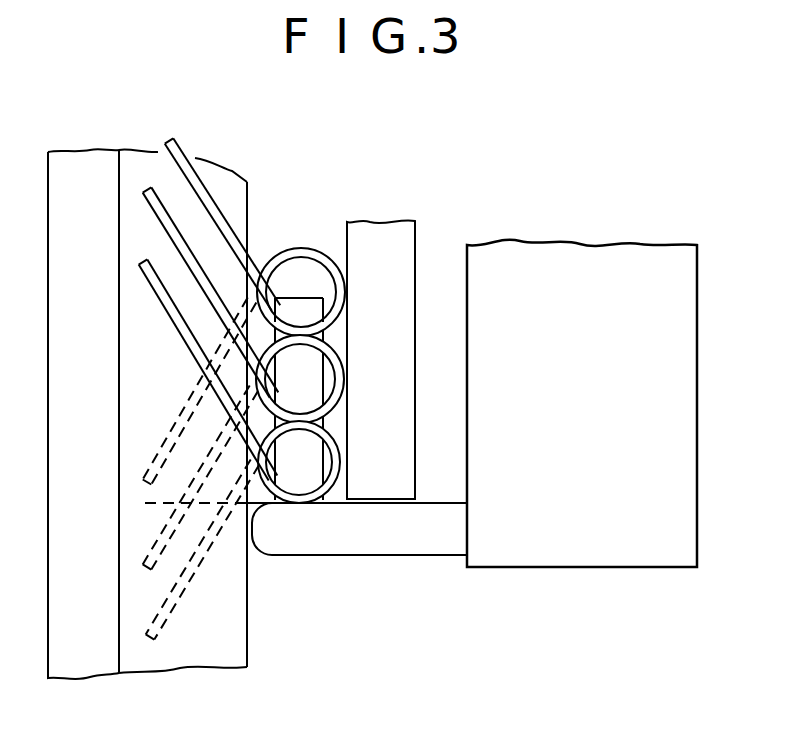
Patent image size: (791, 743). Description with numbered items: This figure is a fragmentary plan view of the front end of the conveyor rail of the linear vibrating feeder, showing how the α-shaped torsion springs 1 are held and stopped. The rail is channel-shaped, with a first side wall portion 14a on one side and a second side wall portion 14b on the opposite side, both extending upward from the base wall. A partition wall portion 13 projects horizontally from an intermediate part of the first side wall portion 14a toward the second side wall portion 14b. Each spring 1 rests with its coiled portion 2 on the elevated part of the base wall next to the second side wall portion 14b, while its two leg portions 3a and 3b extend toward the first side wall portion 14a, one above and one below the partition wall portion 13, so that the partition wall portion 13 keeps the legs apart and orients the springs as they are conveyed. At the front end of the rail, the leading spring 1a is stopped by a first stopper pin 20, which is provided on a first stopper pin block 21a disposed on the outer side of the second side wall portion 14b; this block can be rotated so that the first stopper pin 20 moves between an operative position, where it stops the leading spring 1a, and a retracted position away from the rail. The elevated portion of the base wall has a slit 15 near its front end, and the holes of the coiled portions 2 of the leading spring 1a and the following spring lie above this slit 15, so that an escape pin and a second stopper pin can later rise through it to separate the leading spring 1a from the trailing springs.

The α-shaped torsion spring 1 is at (183, 141).
The leading spring 1a is at (302, 502).
The coiled portion 2 is at (323, 247).
The leg portion 3a is at (212, 212).
The leg portion 3b is at (158, 620).
The partition wall portion 13 is at (223, 637).
The first side wall portion 14a is at (88, 617).
The second side wall portion 14b is at (385, 355).
The slit 15 is at (297, 302).
The first stopper pin 20 is at (418, 557).
The first stopper pin block 21a is at (608, 552).